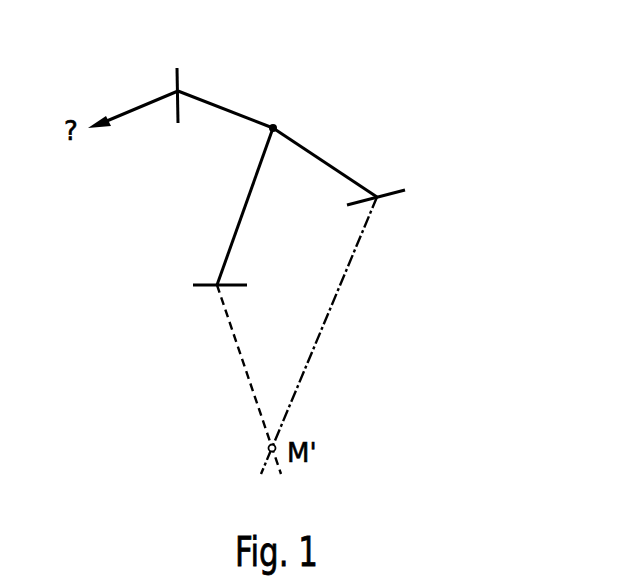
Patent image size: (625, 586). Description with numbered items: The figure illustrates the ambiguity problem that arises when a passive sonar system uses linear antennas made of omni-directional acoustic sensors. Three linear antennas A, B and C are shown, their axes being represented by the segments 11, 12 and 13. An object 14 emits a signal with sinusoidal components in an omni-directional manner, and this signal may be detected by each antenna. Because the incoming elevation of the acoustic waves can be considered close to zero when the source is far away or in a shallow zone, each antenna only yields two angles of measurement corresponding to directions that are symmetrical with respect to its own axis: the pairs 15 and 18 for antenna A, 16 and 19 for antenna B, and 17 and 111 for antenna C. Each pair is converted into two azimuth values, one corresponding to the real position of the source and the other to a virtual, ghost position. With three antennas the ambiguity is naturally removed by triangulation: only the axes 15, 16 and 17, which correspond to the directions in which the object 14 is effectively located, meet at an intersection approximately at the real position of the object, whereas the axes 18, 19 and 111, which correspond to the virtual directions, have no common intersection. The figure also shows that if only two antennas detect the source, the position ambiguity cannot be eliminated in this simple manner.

The axis of antenna A 11 is at (193, 285).
The axis of antenna B 12 is at (395, 190).
The axis of antenna C 13 is at (178, 120).
The object 14 is at (273, 125).
The real direction axis from antenna A 15 is at (252, 195).
The real direction axis from antenna B 16 is at (322, 157).
The real direction axis from antenna C 17 is at (227, 110).
The virtual direction axis from antenna A 18 is at (243, 367).
The virtual direction axis from antenna B 19 is at (333, 307).
The virtual direction axis from antenna C 111 is at (127, 113).